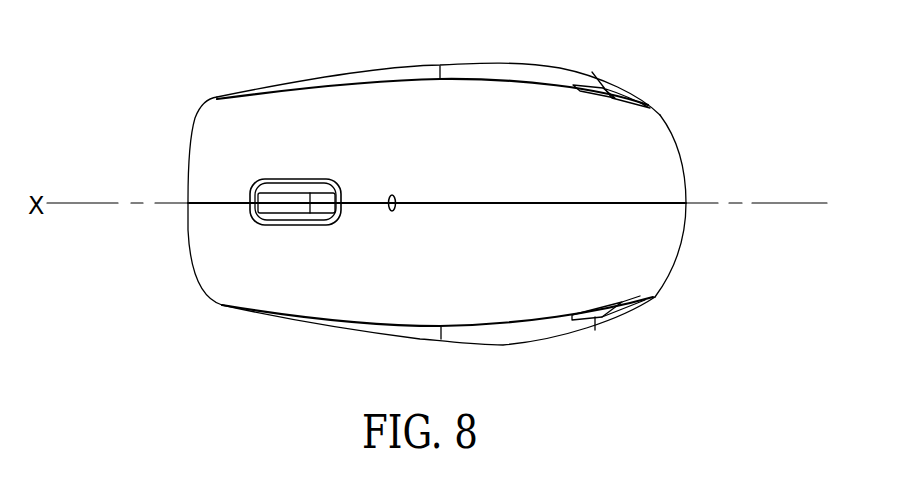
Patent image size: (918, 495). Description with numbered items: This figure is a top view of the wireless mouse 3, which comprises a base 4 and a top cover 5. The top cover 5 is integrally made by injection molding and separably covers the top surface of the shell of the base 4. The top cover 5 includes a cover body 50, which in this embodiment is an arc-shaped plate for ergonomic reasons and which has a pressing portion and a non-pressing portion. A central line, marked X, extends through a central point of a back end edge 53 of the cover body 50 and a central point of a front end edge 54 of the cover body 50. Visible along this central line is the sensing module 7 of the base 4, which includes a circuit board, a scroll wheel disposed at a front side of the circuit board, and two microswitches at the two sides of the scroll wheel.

The wireless mouse 3 is at (687, 100).
The base 4 is at (563, 75).
The cover body 50 is at (478, 78).
The back end edge 53 is at (685, 173).
The front end edge 54 is at (187, 165).
The top cover 5 is at (630, 240).
The sensing module 7 is at (258, 222).